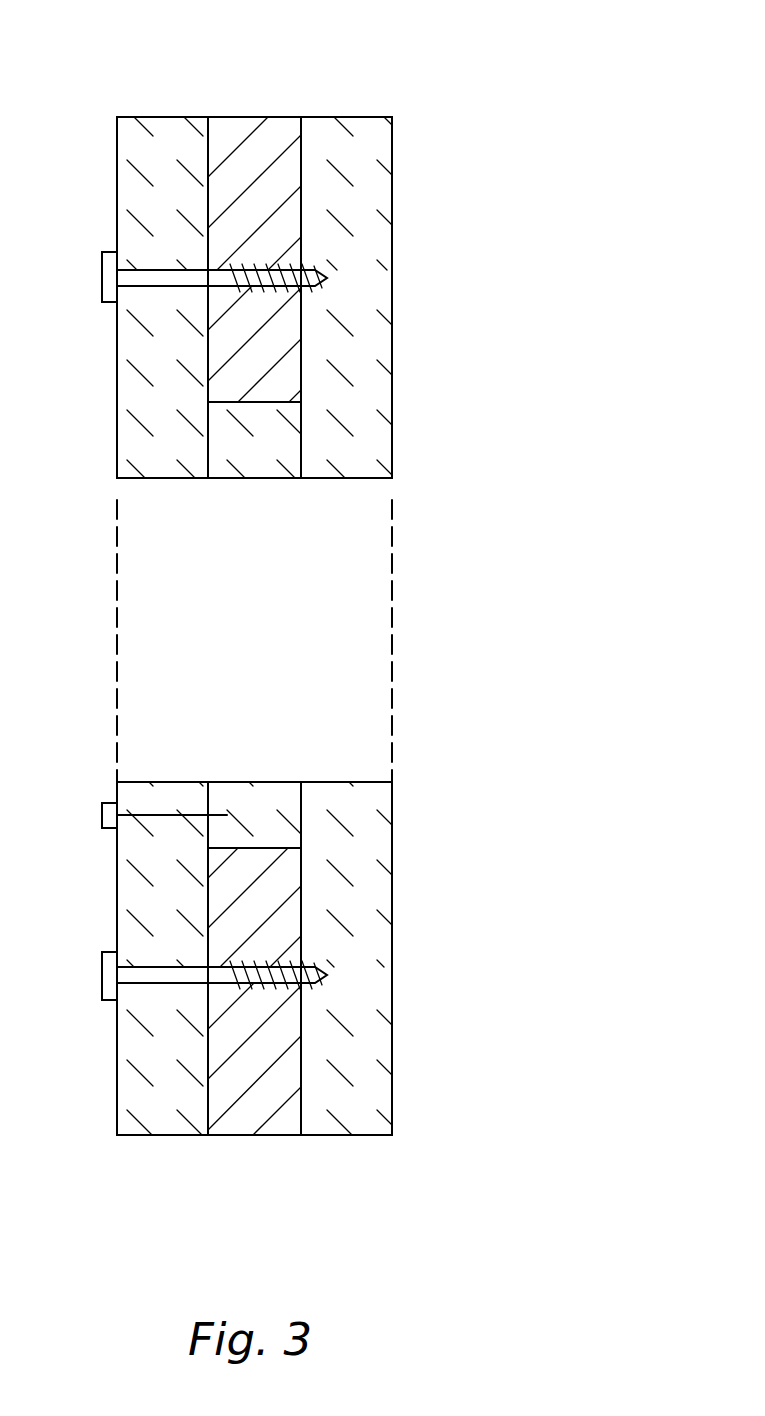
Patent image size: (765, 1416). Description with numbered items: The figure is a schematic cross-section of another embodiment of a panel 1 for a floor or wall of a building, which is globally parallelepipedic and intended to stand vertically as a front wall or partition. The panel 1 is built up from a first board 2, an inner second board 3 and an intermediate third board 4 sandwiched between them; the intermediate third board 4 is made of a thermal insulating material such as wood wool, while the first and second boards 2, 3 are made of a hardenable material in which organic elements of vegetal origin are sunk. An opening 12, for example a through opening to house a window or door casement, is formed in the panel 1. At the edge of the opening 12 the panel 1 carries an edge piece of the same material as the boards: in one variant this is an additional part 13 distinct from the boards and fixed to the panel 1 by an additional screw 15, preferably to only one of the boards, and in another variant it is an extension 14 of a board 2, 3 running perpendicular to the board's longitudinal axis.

The panel 1 is at (416, 70).
The first board 2 is at (158, 138).
The inner second board 3 is at (352, 138).
The intermediate third board 4 is at (257, 138).
The opening 12 is at (172, 615).
The additional part 13 is at (258, 812).
The extension 14 is at (257, 458).
The additional screw 15 is at (158, 813).